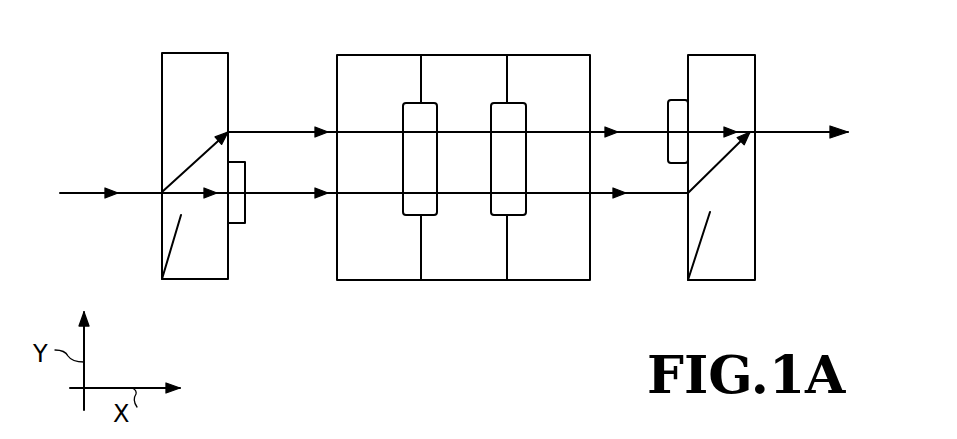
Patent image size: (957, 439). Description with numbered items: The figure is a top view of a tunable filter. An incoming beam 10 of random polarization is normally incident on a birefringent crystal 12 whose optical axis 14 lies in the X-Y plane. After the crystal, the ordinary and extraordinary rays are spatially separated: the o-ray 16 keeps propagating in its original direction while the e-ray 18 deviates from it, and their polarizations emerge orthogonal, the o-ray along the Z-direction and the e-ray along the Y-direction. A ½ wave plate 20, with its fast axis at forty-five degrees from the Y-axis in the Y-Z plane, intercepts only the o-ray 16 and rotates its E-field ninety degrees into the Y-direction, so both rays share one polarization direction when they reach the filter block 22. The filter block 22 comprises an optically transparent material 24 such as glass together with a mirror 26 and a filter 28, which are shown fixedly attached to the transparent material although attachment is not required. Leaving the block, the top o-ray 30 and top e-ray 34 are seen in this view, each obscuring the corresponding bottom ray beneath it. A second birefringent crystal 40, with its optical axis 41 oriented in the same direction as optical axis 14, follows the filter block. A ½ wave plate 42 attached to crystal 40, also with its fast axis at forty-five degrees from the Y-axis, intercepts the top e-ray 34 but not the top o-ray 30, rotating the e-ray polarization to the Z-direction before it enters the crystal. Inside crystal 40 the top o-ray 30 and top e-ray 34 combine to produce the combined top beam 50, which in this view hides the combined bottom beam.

The incoming beam 10 is at (92, 192).
The birefringent crystal 12 is at (190, 53).
The optical axis 14 is at (170, 230).
The o-ray 16 is at (207, 197).
The e-ray 18 is at (197, 153).
The ½ wave plate 20 is at (247, 210).
The filter block 22 is at (356, 55).
The optically transparent material 24 is at (472, 72).
The mirror 26 is at (440, 220).
The filter 28 is at (517, 220).
The top o-ray 30 is at (663, 200).
The top e-ray 34 is at (642, 128).
The birefringent crystal 40 is at (733, 53).
The optical axis 41 is at (703, 233).
The ½ wave plate 42 is at (672, 97).
The combined top beam 50 is at (790, 132).